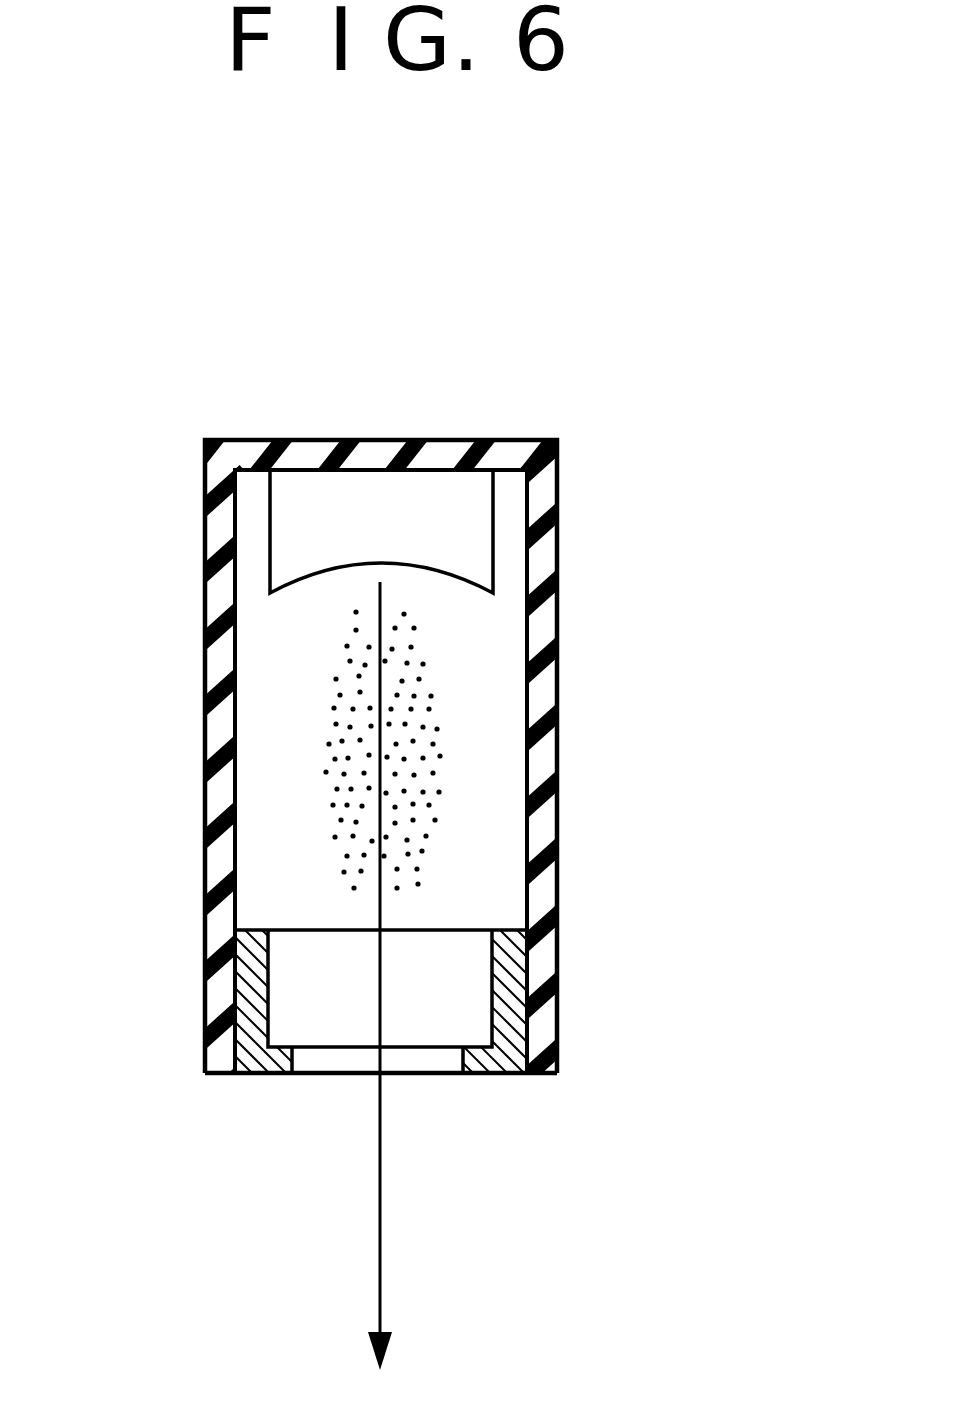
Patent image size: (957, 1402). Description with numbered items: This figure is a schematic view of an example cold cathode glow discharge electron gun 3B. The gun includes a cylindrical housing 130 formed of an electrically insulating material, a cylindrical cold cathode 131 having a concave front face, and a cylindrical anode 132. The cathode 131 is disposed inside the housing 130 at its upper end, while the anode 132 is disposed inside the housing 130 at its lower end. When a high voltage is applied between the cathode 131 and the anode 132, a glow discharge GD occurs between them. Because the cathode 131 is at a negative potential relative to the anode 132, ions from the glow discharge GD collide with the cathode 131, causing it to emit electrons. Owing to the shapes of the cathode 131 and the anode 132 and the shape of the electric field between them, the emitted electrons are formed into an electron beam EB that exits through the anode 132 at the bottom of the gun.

The cold cathode glow discharge electron gun 3B is at (198, 420).
The cylindrical housing 130 is at (540, 554).
The cylindrical cold cathode 131 is at (377, 500).
The cylindrical anode 132 is at (508, 962).
The glow discharge GD is at (404, 766).
The electron beam EB is at (381, 1268).